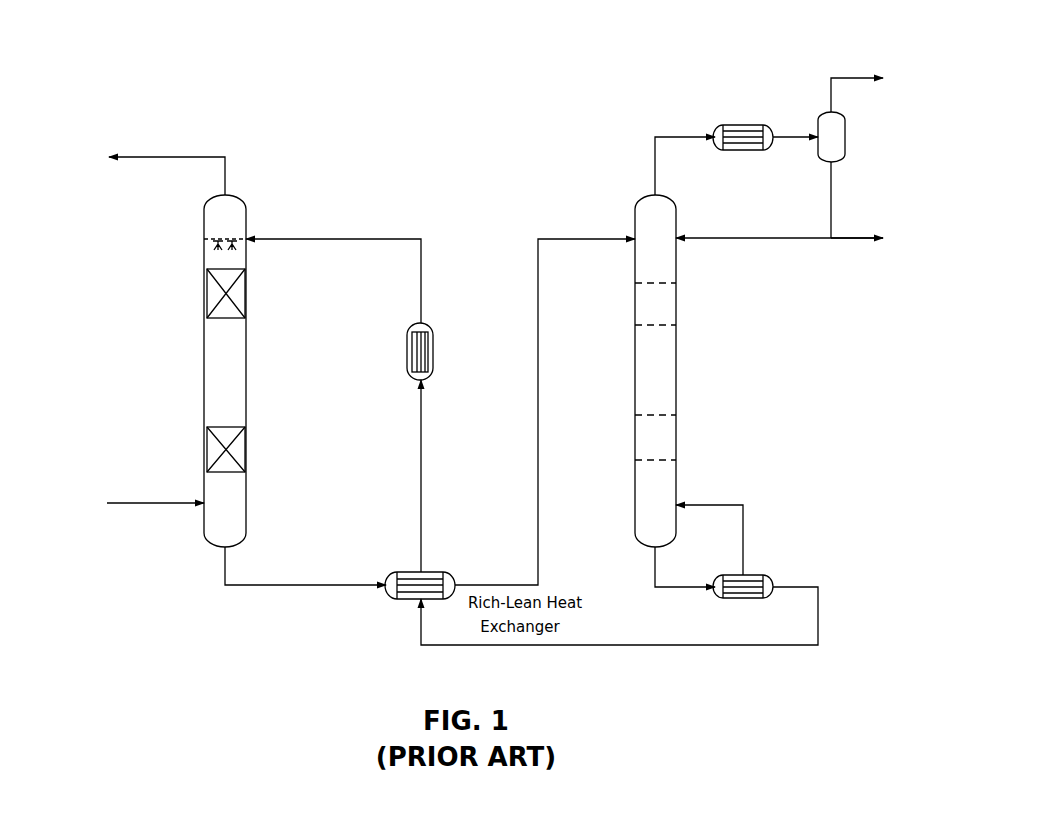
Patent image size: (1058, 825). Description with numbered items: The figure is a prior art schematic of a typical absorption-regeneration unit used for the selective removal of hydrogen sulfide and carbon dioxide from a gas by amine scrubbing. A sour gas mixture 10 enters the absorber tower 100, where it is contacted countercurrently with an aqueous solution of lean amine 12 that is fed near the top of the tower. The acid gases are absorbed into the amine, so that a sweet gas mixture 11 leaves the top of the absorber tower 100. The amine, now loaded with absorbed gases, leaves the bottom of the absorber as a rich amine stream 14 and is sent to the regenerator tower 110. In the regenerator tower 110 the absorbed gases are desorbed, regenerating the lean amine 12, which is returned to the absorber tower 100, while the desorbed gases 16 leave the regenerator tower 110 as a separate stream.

The sour gas mixture 10 is at (135, 520).
The sweet gas mixture 11 is at (142, 156).
The lean amine 12 is at (335, 232).
The rich amine stream 14 is at (273, 587).
The desorbed gases 16 is at (789, 164).
The absorber tower 100 is at (198, 389).
The regenerator tower 110 is at (680, 388).